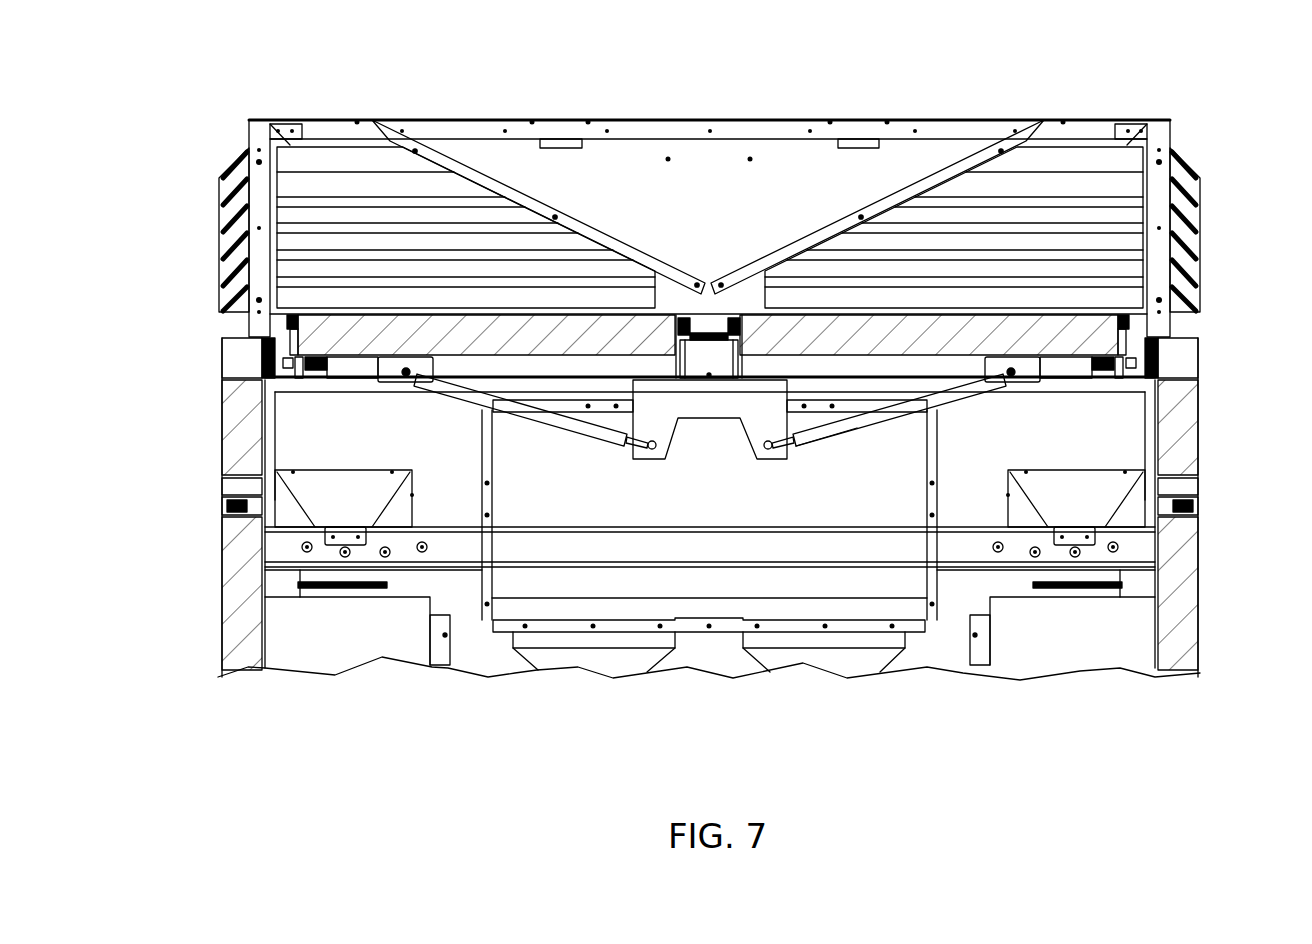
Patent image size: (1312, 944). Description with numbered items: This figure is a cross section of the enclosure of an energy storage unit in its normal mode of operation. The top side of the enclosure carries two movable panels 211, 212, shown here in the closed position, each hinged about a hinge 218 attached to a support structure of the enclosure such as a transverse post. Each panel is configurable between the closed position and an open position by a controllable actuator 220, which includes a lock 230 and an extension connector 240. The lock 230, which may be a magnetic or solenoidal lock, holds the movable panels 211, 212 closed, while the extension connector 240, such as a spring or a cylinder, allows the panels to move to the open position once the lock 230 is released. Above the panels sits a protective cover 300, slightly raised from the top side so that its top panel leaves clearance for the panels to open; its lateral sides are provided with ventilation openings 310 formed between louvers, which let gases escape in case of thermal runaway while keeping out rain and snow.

The protective cover 300 is at (396, 113).
The hinge 218 is at (708, 318).
The ventilation openings 310 is at (1102, 190).
The movable panel 211 is at (348, 334).
The movable panel 212 is at (1060, 336).
The lock 230 is at (1113, 364).
The controllable actuator 220 is at (925, 403).
The extension connector 240 is at (852, 420).